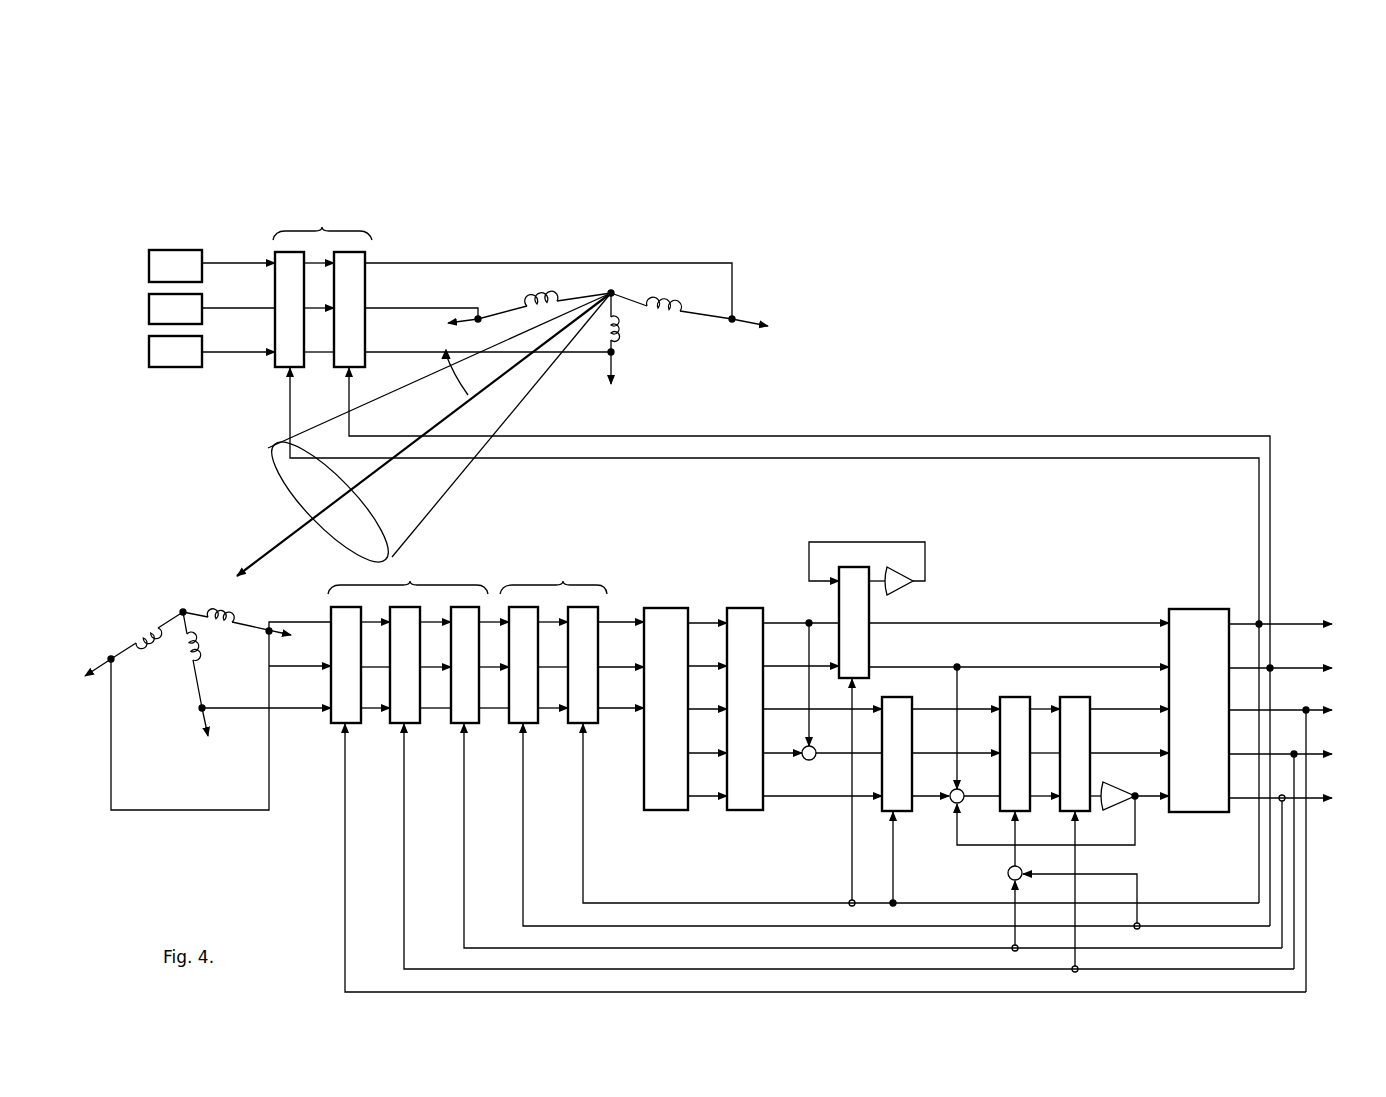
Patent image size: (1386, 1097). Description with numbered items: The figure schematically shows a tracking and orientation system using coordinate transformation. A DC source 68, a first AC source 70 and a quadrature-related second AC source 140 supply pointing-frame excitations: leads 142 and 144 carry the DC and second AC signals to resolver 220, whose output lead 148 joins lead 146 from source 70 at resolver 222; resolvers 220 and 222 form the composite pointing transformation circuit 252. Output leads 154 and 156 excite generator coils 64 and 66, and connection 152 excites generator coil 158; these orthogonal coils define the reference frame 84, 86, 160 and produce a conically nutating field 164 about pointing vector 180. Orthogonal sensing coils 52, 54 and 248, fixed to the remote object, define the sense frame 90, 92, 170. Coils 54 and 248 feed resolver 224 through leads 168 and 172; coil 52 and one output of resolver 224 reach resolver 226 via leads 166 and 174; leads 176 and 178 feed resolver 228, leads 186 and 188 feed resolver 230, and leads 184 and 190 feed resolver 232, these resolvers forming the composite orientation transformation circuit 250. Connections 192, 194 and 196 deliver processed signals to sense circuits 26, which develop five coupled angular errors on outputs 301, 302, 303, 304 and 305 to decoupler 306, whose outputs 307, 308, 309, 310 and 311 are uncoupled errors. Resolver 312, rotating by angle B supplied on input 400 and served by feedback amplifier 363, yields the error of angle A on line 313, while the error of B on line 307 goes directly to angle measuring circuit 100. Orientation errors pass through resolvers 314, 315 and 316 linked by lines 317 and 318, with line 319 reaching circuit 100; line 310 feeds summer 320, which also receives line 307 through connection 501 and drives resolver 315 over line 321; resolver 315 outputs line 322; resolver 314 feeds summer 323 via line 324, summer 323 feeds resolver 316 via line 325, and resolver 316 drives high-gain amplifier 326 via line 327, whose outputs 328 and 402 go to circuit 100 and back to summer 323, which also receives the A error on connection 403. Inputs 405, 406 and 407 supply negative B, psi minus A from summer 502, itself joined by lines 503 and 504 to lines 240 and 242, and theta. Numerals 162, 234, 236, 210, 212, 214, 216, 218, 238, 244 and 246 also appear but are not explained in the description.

The DC source 68 is at (144, 273).
The AC1 source 70 is at (144, 317).
The AC2 source 140 is at (146, 361).
The lead 142 is at (217, 263).
The output lead 146 is at (220, 306).
The lead 144 is at (224, 348).
The output lead 148 is at (317, 267).
The connection 152 is at (316, 352).
The resolver 220 is at (283, 239).
The resolver 222 is at (341, 239).
The composite pointing coordinate transformation circuit 252 is at (440, 401).
The output lead 154 is at (400, 260).
The output lead 156 is at (399, 307).
The magnetic field generating coil 64 is at (668, 300).
The magnetic field generating coil 66 is at (542, 302).
The reference frame coordinate axis 84 is at (740, 319).
The reference frame coordinate axis 86 is at (470, 330).
The magnetic field generating coil 158 is at (616, 328).
The reference frame coordinate axis 160 is at (613, 367).
The cone half angle 162 is at (468, 385).
The conically nutating magnetic field 164 is at (384, 522).
The pointing vector 180 is at (277, 549).
The A feedback line 234 is at (652, 432).
The B feedback line 236 is at (655, 455).
The magnetic field sensing coil 54 is at (146, 632).
The magnetic field sensing coil 52 is at (226, 606).
The sense frame coordinate axis 92 is at (98, 662).
The sense frame coordinate axis 90 is at (269, 636).
The magnetic field sensing coil 248 is at (183, 659).
The sense frame coordinate axis 170 is at (197, 735).
The lead 166 is at (284, 621).
The lead 168 is at (282, 664).
The lead 172 is at (285, 705).
The resolver 224 is at (338, 592).
The resolver 226 is at (395, 592).
The resolver 228 is at (482, 603).
The resolver 230 is at (513, 592).
The resolver 232 is at (571, 592).
The composite orientation coordinate transformation circuit 250 is at (413, 571).
The lead 174 is at (368, 710).
The lead 176 is at (374, 667).
The lead 178 is at (438, 624).
The lead 184 is at (494, 707).
The lead 186 is at (466, 649).
The lead 188 is at (506, 667).
The lead 190 is at (556, 627).
The connection 192 is at (608, 667).
The connection 194 is at (606, 612).
The connection 196 is at (607, 708).
The sense circuits 26 is at (660, 598).
The decoupler 306 is at (738, 598).
The output 301 is at (702, 623).
The output 302 is at (699, 666).
The output 303 is at (699, 709).
The output 304 is at (699, 752).
The output 305 is at (699, 794).
The output line 307 is at (775, 611).
The output 308 is at (765, 667).
The output 309 is at (775, 698).
The output line 310 is at (775, 754).
The output 311 is at (773, 794).
The connection line 501 is at (808, 692).
The summer 320 is at (809, 762).
The output line 321 is at (819, 755).
The resolver 312 is at (848, 558).
The feedback amplifier 363 is at (901, 590).
The output line 313 is at (891, 665).
The resolver 314 is at (893, 686).
The resolver 315 is at (1008, 686).
The resolver 316 is at (1073, 686).
The output line 317 is at (923, 714).
The output line 318 is at (1043, 715).
The output line 319 is at (1121, 693).
The output line 322 is at (1054, 769).
The summer 323 is at (964, 785).
The output line 324 is at (924, 786).
The output line 325 is at (972, 803).
The high gain feedback amplifier 326 is at (1118, 818).
The output line 327 is at (1095, 786).
The output line 328 is at (1135, 792).
The input 400 is at (856, 864).
The output line 402 is at (970, 845).
The connection line 403 is at (966, 748).
The input 405 is at (900, 864).
The input 406 is at (1023, 856).
The input 407 is at (1083, 855).
The summer 502 is at (1008, 870).
The line 503 is at (1143, 877).
The line 504 is at (1026, 890).
The angle measuring circuit 100 is at (1186, 598).
The B output 210 is at (1285, 623).
The A output 212 is at (1285, 668).
The phi output 214 is at (1284, 711).
The theta output 216 is at (1282, 754).
The psi output 218 is at (1282, 795).
The B feedback line 238 is at (1208, 888).
The line 240 is at (1208, 910).
The line 242 is at (1208, 933).
The theta feedback line 244 is at (1208, 953).
The phi feedback line 246 is at (1208, 975).